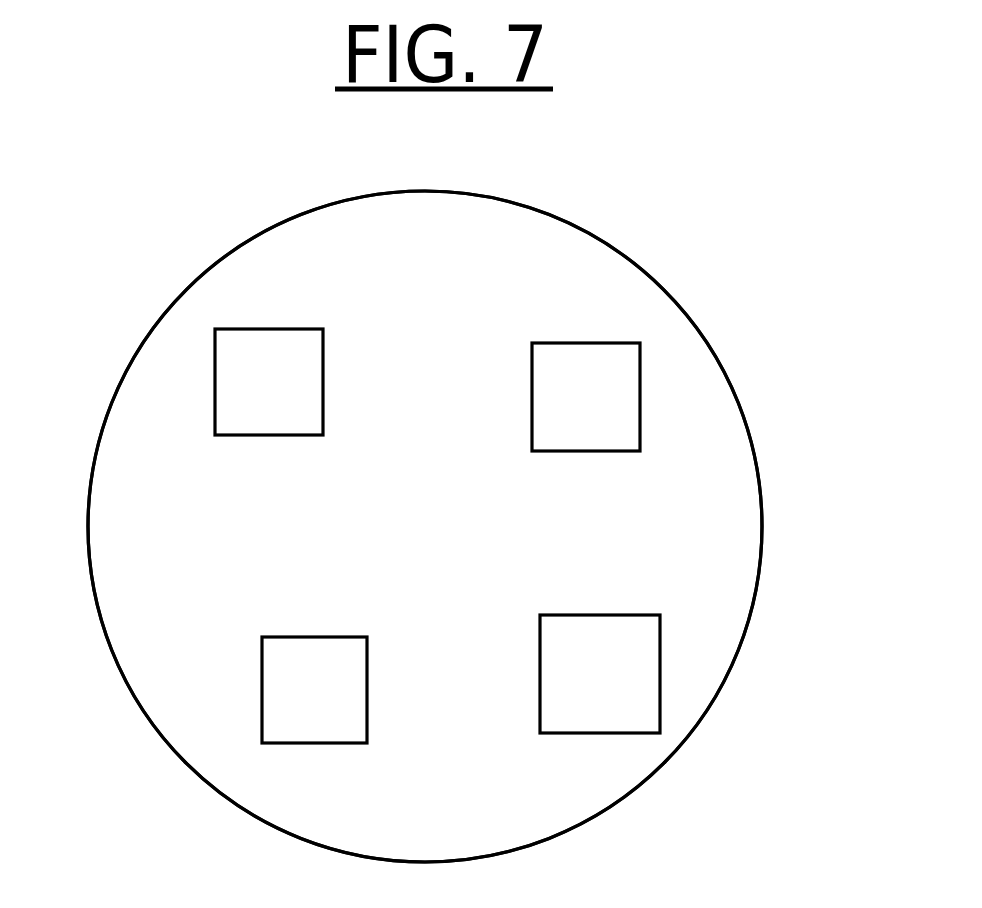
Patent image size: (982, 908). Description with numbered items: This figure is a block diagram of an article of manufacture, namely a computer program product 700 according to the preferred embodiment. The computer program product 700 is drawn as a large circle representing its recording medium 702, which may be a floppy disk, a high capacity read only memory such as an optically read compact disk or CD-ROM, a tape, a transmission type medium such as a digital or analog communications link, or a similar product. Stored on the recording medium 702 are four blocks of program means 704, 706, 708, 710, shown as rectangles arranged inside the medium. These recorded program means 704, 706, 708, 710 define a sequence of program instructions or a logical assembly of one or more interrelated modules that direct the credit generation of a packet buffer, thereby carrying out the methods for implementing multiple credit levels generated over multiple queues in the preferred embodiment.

The computer program product 700 is at (727, 295).
The recording medium 702 is at (140, 322).
The program means 704 is at (314, 690).
The program means 706 is at (600, 674).
The program means 708 is at (586, 397).
The program means 710 is at (269, 382).